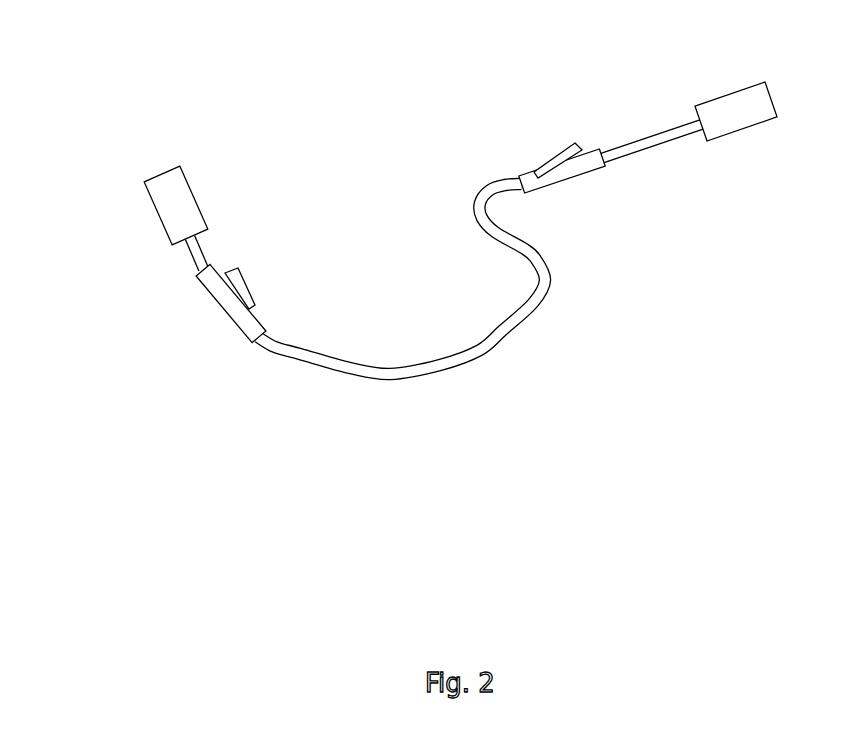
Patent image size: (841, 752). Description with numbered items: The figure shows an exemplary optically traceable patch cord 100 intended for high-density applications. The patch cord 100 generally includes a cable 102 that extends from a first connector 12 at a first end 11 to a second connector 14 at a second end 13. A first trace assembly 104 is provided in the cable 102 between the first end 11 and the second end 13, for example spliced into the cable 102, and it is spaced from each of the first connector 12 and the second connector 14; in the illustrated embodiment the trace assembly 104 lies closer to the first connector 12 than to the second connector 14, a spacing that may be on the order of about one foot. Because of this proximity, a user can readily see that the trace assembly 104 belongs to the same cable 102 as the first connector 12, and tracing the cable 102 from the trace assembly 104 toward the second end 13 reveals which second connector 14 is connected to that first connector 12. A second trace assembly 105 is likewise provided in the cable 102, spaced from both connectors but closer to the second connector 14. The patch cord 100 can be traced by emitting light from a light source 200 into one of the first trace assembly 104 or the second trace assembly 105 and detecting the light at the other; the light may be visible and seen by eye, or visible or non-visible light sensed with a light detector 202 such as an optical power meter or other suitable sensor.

The patch cord 100 is at (221, 79).
The first end 11 is at (177, 274).
The first connector 12 is at (187, 213).
The second end 13 is at (698, 153).
The second connector 14 is at (750, 107).
The cable 102 is at (460, 360).
The first trace assembly 104 is at (232, 307).
The second trace assembly 105 is at (562, 173).
The light source 200 is at (234, 267).
The light detector 202 is at (579, 146).